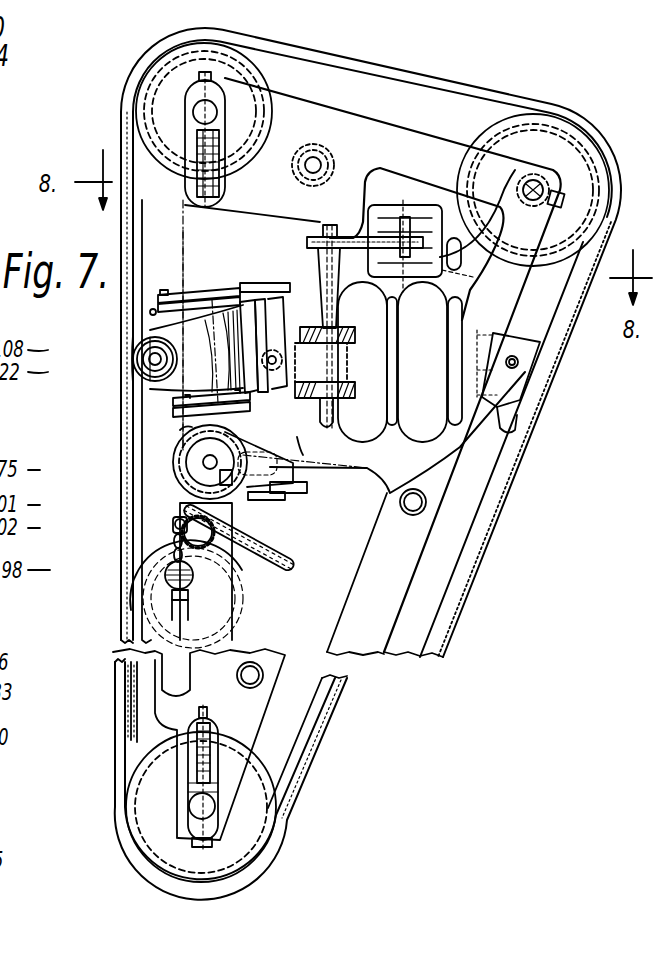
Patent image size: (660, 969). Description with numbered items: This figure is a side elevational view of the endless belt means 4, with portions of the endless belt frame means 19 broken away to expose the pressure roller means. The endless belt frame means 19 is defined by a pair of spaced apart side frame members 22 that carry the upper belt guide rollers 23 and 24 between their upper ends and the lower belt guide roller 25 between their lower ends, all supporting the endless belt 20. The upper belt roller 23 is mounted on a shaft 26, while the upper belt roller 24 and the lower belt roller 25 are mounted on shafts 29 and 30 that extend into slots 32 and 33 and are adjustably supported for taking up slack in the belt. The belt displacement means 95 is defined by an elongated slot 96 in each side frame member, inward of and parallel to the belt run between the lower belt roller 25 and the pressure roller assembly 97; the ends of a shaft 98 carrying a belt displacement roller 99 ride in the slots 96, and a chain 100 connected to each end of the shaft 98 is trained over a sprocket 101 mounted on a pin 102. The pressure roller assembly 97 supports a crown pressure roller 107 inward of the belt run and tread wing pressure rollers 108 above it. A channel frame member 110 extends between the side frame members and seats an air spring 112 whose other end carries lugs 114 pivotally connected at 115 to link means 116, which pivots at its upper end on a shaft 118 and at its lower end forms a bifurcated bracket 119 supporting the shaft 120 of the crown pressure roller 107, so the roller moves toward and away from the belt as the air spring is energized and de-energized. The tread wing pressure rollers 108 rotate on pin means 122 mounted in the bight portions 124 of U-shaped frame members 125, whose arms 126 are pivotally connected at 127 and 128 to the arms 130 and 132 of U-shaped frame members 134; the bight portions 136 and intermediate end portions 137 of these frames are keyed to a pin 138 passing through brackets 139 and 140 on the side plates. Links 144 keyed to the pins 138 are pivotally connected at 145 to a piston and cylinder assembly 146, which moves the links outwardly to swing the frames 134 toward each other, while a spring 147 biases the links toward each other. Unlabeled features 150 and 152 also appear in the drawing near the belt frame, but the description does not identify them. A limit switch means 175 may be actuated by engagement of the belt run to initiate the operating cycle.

The endless belt means 4 is at (506, 540).
The endless belt frame means 19 is at (458, 128).
The endless belt 20 is at (390, 72).
The side frame members 22 is at (410, 141).
The upper belt guide roller 23 is at (570, 152).
The upper belt guide roller 24 is at (160, 107).
The lower belt guide roller 25 is at (247, 807).
The shaft 26 is at (523, 188).
The shaft 29 is at (218, 103).
The shaft 30 is at (192, 805).
The slot 32 is at (220, 152).
The slot 33 is at (213, 760).
The belt displacement means 95 is at (130, 617).
The elongated slot 96 is at (147, 630).
The pressure roller assembly 97 is at (100, 386).
The shaft 98 is at (233, 605).
The belt displacement roller 99 is at (173, 522).
The chain 100 is at (283, 551).
The sprocket 101 is at (237, 553).
The pin 102 is at (177, 513).
The crown pressure roller 107 is at (200, 462).
The tread wing pressure roller 108 is at (132, 338).
The channel frame member 110 is at (493, 422).
The air spring 112 is at (384, 513).
The lugs 114 is at (268, 327).
The pivotal connection 115 is at (229, 525).
The link means 116 is at (280, 222).
The shaft 118 is at (328, 158).
The bifurcated bracket 119 is at (310, 486).
The shaft 120 is at (172, 463).
The bearing supported pin means 122 is at (143, 355).
The bight portion 124 is at (248, 300).
The U-shaped frame member 125 is at (150, 312).
The arm 126 is at (200, 300).
The pivotal connection 127 is at (175, 292).
The pivotal connection 128 is at (187, 430).
The arm 130 is at (230, 285).
The arm 132 is at (300, 455).
The U-shaped frame member 134 is at (256, 276).
The bight portion 136 is at (340, 306).
The intermediate end portion 137 is at (340, 377).
The pin 138 is at (334, 414).
The bracket 139 is at (357, 338).
The bracket 140 is at (355, 389).
The link 144 is at (390, 200).
The pivotal connection 145 is at (417, 227).
The piston and cylinder assembly 146 is at (417, 275).
The spring 147 is at (387, 210).
The curved guide 150 is at (477, 238).
The mounting bracket 152 is at (518, 364).
The limit switch means 175 is at (250, 500).